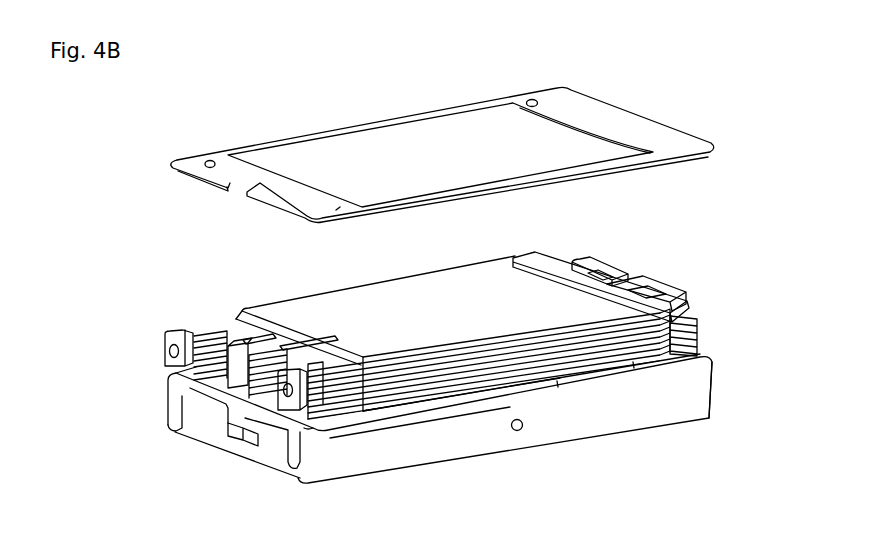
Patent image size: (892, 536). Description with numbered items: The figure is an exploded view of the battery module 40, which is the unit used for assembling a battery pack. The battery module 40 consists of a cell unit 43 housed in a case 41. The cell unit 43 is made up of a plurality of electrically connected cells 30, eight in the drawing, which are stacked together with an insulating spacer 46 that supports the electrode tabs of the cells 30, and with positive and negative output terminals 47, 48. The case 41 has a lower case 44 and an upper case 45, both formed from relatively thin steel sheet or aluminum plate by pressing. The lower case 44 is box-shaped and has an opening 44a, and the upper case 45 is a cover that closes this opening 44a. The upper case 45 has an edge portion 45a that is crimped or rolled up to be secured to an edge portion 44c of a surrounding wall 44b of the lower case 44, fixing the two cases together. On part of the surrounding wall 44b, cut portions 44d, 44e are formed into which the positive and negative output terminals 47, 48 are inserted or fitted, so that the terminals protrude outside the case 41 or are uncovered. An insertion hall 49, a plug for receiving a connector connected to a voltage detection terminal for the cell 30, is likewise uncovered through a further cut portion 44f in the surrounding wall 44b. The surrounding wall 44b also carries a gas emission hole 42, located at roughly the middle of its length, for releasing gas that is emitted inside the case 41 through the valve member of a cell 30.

The battery module 40 is at (268, 96).
The case 41 is at (778, 177).
The cell unit 43 is at (318, 302).
The cell 30 is at (460, 372).
The upper case 45 is at (710, 150).
The edge portion 45a is at (622, 161).
The insulating spacer 46 is at (697, 338).
The positive output terminal 47 is at (170, 333).
The negative output terminal 48 is at (292, 385).
The insertion hall 49 is at (240, 366).
The lower case 44 is at (709, 392).
The opening 44a is at (323, 427).
The surrounding wall 44b is at (623, 423).
The edge portion 44c is at (553, 395).
The cut portion 44d is at (178, 422).
The cut portion 44e is at (295, 462).
The cut portion 44f is at (240, 450).
The gas emission hole 42 is at (517, 432).